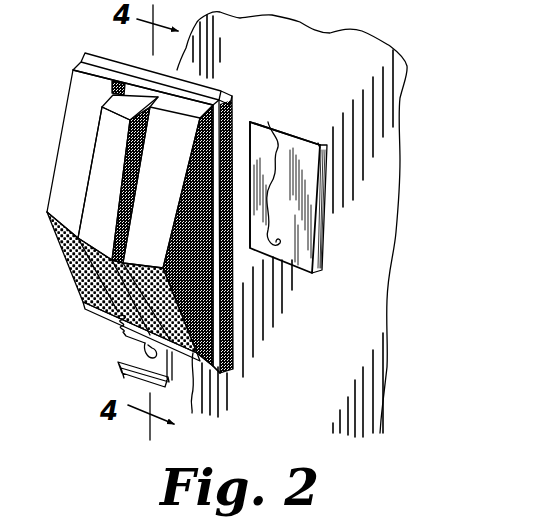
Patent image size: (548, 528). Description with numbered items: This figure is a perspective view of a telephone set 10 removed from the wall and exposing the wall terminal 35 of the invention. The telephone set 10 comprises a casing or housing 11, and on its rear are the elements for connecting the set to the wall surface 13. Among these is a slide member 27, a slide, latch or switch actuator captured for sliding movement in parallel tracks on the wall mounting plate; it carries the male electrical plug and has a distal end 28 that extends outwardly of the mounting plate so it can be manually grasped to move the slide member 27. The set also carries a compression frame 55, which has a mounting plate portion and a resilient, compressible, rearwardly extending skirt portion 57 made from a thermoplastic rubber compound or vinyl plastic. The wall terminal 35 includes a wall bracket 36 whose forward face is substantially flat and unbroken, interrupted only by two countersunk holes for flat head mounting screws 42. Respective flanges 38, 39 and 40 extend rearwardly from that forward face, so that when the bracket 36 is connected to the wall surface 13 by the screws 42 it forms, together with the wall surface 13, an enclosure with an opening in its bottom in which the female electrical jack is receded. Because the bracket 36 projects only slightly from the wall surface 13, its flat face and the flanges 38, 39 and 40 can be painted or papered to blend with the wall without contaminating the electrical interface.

The telephone set 10 is at (80, 112).
The casing or housing 11 is at (63, 173).
The wall surface 13 is at (292, 224).
The slide member 27 is at (128, 349).
The distal end 28 is at (122, 370).
The wall terminal 35 is at (332, 100).
The wall bracket 36 is at (272, 122).
The flange 38 is at (320, 197).
The flange 39 is at (318, 143).
The flange 40 is at (250, 133).
The screws 42 is at (282, 193).
The compression frame 55 is at (218, 90).
The skirt portion 57 is at (143, 43).